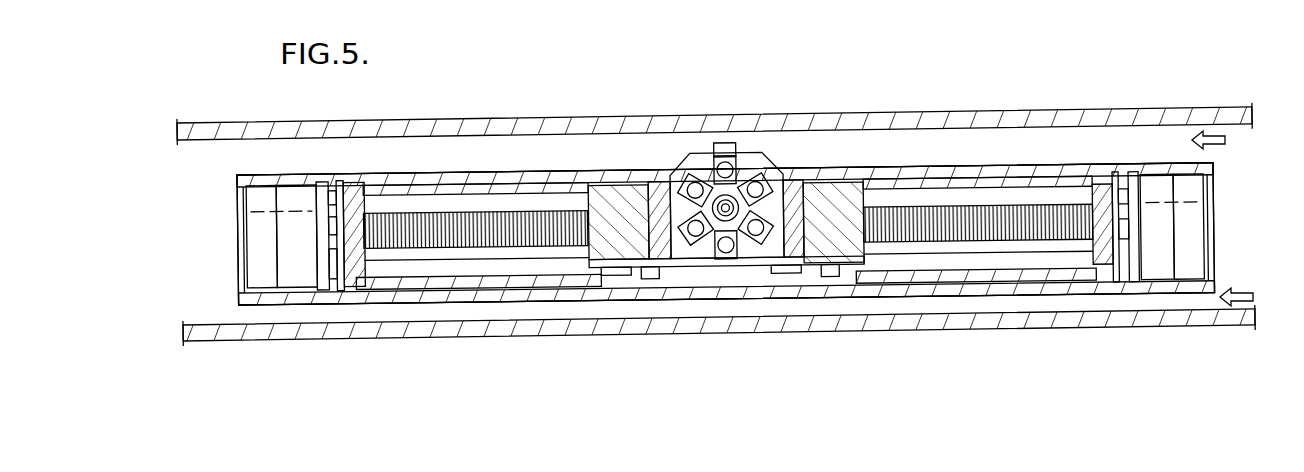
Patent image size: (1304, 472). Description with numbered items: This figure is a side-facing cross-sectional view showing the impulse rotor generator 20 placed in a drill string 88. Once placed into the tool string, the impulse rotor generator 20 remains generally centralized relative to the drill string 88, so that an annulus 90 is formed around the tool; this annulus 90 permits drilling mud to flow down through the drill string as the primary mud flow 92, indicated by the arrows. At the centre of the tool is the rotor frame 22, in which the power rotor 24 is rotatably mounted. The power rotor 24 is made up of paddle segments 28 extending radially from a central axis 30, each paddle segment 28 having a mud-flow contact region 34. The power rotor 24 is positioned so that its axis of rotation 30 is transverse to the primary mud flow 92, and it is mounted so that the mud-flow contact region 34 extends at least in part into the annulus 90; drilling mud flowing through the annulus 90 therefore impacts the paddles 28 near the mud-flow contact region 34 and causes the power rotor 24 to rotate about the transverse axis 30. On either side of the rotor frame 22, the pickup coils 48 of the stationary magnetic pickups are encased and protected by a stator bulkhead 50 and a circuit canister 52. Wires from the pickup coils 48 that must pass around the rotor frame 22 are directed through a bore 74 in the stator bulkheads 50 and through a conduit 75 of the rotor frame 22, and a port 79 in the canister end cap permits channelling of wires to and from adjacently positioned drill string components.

The impulse rotor generator 20 is at (805, 150).
The rotor frame 22 is at (690, 168).
The power rotor 24 is at (712, 160).
The paddle segment 28 is at (735, 152).
The central axis 30 is at (737, 224).
The mud-flow contact region 34 is at (767, 165).
The pickup coil 48 is at (408, 250).
The stator bulkhead 50 is at (578, 180).
The circuit canister 52 is at (482, 177).
The bore 74 is at (556, 264).
The conduit 75 is at (688, 266).
The port 79 is at (349, 257).
The drill string 88 is at (1025, 112).
The annulus 90 is at (435, 165).
The primary mud flow 92 is at (1236, 219).